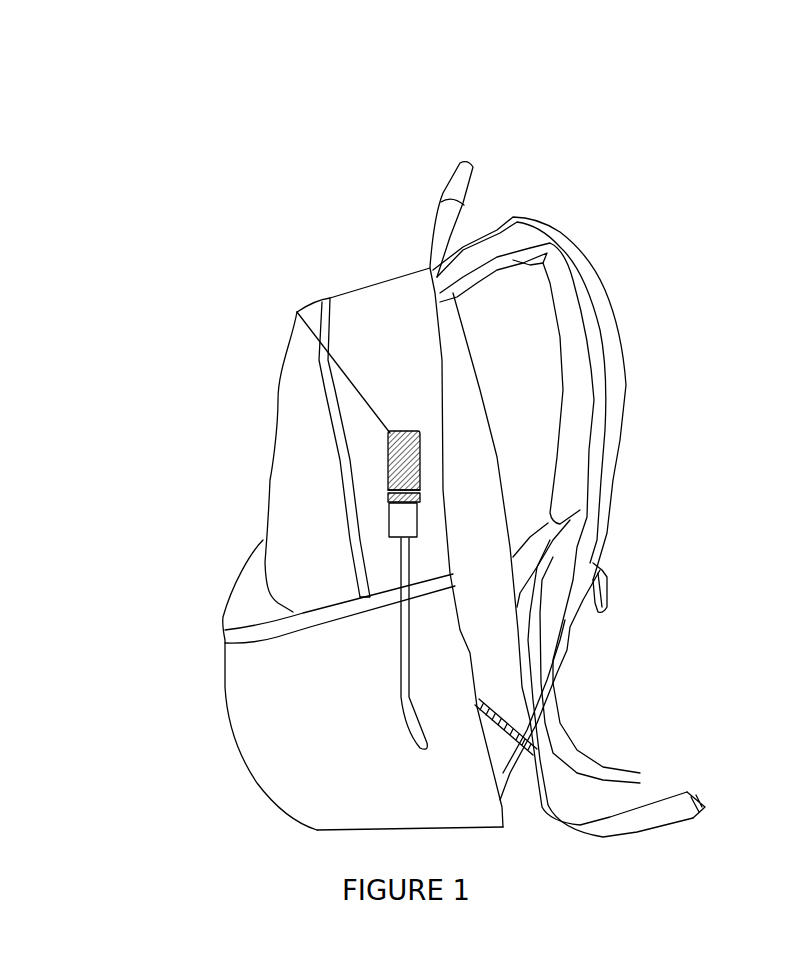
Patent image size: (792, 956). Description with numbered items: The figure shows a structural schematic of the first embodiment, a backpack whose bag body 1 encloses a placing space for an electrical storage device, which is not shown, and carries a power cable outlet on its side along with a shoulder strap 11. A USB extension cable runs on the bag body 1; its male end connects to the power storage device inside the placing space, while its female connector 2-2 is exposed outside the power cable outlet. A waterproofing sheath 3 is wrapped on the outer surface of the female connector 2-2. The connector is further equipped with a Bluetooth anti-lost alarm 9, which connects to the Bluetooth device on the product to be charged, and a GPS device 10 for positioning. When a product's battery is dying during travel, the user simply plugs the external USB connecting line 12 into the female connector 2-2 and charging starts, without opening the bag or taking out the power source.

The bag or luggage body 1 is at (390, 317).
The sheath 3 is at (297, 312).
The Bluetooth anti-lost alarm 9 is at (392, 430).
The GPS device 10 is at (388, 468).
The female connector 2-2 is at (387, 493).
The external USB connecting line 12 is at (407, 533).
The shoulder strap 11 is at (615, 460).